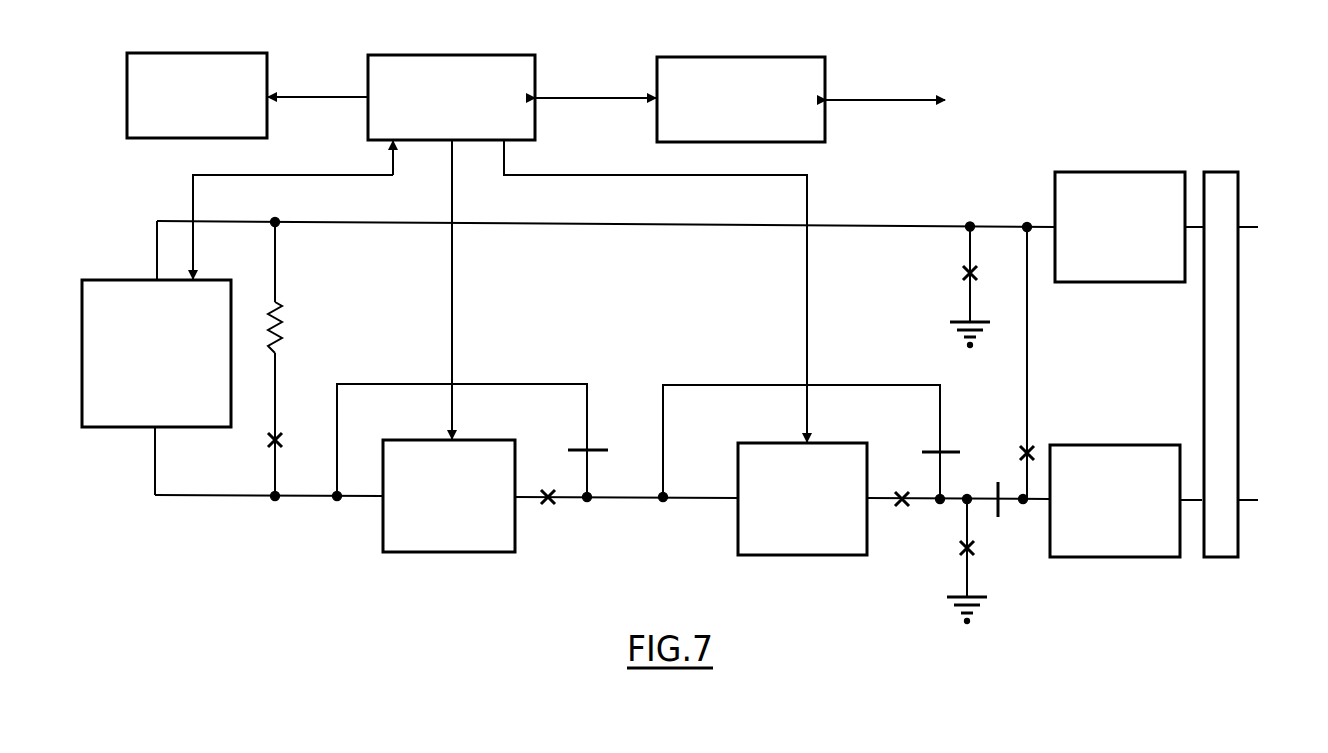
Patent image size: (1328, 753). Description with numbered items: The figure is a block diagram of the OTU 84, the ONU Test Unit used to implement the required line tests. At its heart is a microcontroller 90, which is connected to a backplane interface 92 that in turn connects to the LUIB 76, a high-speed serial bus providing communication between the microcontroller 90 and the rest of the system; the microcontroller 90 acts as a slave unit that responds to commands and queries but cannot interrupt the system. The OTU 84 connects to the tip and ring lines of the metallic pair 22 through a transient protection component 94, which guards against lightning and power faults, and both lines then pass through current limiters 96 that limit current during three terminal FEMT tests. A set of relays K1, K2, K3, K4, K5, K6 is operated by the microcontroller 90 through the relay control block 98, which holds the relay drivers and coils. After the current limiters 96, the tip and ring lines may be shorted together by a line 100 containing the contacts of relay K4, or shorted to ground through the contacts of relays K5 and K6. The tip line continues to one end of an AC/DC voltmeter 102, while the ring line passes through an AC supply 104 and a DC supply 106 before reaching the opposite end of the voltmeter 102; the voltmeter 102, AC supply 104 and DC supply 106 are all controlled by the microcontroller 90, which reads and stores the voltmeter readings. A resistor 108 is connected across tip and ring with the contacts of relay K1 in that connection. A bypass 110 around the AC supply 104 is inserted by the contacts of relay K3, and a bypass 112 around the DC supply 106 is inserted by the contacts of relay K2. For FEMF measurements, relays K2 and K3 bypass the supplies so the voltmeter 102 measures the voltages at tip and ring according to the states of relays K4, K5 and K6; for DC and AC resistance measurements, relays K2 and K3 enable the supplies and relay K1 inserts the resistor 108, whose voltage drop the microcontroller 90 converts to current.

The OTU 84 is at (622, 55).
The relay control block 98 is at (127, 84).
The microcontroller 90 is at (437, 136).
The backplane interface 92 is at (728, 138).
The LUIB 76 is at (857, 101).
The AC/DC voltmeter 102 is at (135, 408).
The resistor 108 is at (282, 310).
The bypass 112 is at (503, 384).
The DC supply 106 is at (467, 535).
The bypass 110 is at (853, 385).
The AC supply 104 is at (783, 538).
The line 100 is at (1027, 350).
The current limiters 96 is at (1085, 172).
The transient protection component 94 is at (1240, 350).
The metallic pair 22 is at (1258, 229).
The relay K1 is at (293, 462).
The relay K2 is at (549, 484).
The relay K3 is at (900, 486).
The relay K4 is at (1008, 453).
The relay K5 is at (981, 287).
The relay K6 is at (978, 561).